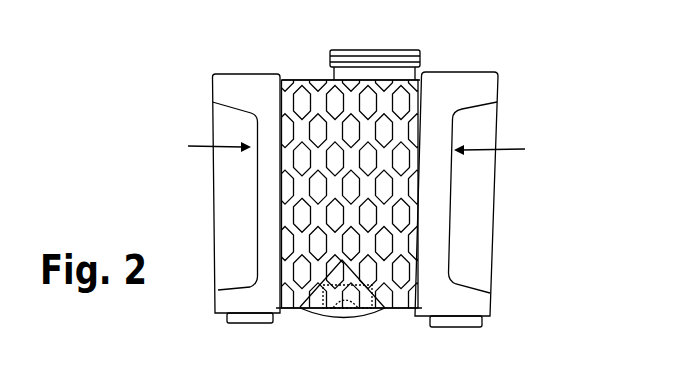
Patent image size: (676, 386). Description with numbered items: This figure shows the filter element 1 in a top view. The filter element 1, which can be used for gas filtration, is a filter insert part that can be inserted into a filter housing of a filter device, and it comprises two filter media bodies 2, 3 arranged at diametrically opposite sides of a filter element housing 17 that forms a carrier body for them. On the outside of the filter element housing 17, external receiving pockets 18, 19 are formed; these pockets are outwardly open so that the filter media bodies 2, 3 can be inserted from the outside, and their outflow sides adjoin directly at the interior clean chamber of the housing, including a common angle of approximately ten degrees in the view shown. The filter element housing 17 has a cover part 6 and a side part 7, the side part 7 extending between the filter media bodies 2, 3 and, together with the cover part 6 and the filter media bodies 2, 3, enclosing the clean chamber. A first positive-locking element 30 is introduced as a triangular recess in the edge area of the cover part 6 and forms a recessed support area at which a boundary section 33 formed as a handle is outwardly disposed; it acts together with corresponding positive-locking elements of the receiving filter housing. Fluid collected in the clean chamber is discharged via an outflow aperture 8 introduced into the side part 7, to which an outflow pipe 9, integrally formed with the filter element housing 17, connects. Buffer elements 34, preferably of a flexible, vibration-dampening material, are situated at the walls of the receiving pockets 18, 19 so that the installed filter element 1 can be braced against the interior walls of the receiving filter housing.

The filter element 1 is at (168, 71).
The filter media body 2 is at (477, 213).
The filter media body 3 is at (230, 203).
The cover part 6 is at (390, 107).
The side part 7 is at (313, 80).
The outflow aperture 8 is at (347, 80).
The outflow pipe 9 is at (397, 50).
The filter element housing 17 is at (295, 70).
The receiving pocket 18 is at (506, 149).
The receiving pocket 19 is at (197, 142).
The first positive-locking element 30 is at (344, 275).
The boundary section 33 is at (377, 312).
The buffer element 34 is at (230, 318).